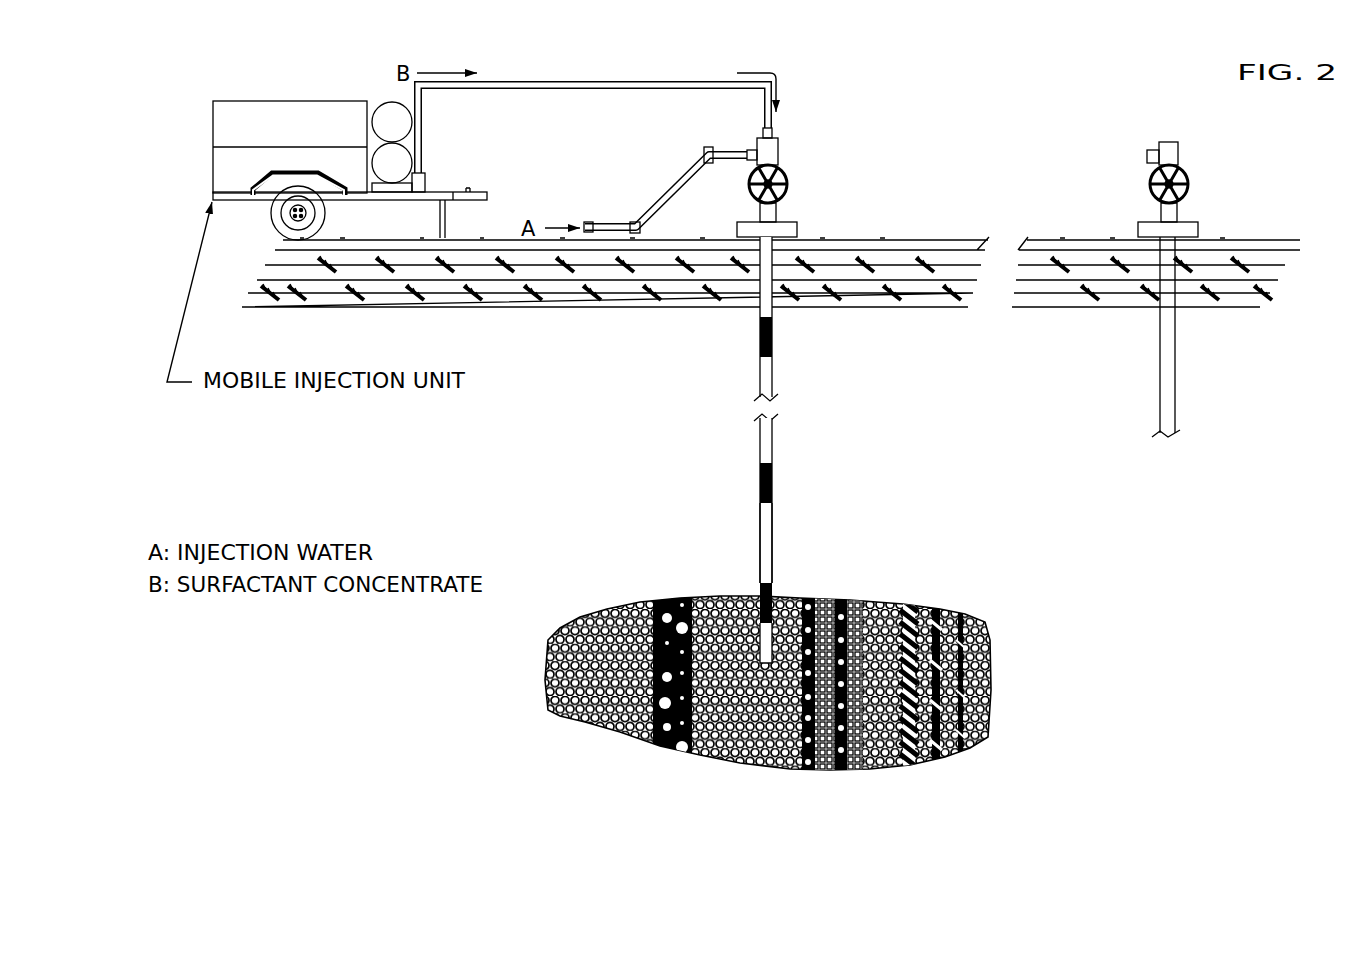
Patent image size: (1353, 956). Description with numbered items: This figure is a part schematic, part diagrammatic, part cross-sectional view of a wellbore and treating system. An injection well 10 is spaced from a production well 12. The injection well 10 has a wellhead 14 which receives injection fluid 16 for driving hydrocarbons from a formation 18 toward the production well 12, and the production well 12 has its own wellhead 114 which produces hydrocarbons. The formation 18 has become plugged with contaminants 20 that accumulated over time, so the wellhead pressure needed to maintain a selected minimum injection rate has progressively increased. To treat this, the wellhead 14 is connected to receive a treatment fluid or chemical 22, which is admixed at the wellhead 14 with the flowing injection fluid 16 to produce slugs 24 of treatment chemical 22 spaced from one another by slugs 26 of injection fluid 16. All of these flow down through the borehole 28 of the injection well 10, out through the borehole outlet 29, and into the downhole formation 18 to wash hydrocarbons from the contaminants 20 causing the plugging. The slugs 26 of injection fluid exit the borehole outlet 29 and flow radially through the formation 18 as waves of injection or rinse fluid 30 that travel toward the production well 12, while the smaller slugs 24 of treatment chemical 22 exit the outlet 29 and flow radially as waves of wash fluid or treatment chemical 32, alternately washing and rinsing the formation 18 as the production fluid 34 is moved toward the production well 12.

The injection well 10 is at (745, 468).
The production well 12 is at (1127, 185).
The wellhead 14 is at (777, 127).
The wellhead 114 is at (1148, 143).
The injection fluid 16 is at (653, 193).
The formation 18 is at (562, 712).
The contaminants 20 is at (670, 758).
The treatment fluid or chemical 22 is at (382, 95).
The slugs of treatment chemical 24 is at (772, 587).
The slugs of injection fluid 26 is at (760, 377).
The borehole 28 is at (758, 562).
The borehole outlet 29 is at (764, 665).
The waves of injection or rinse fluid 30 is at (810, 772).
The waves of wash fluid or treatment chemical 32 is at (833, 593).
The production fluid 34 is at (910, 605).